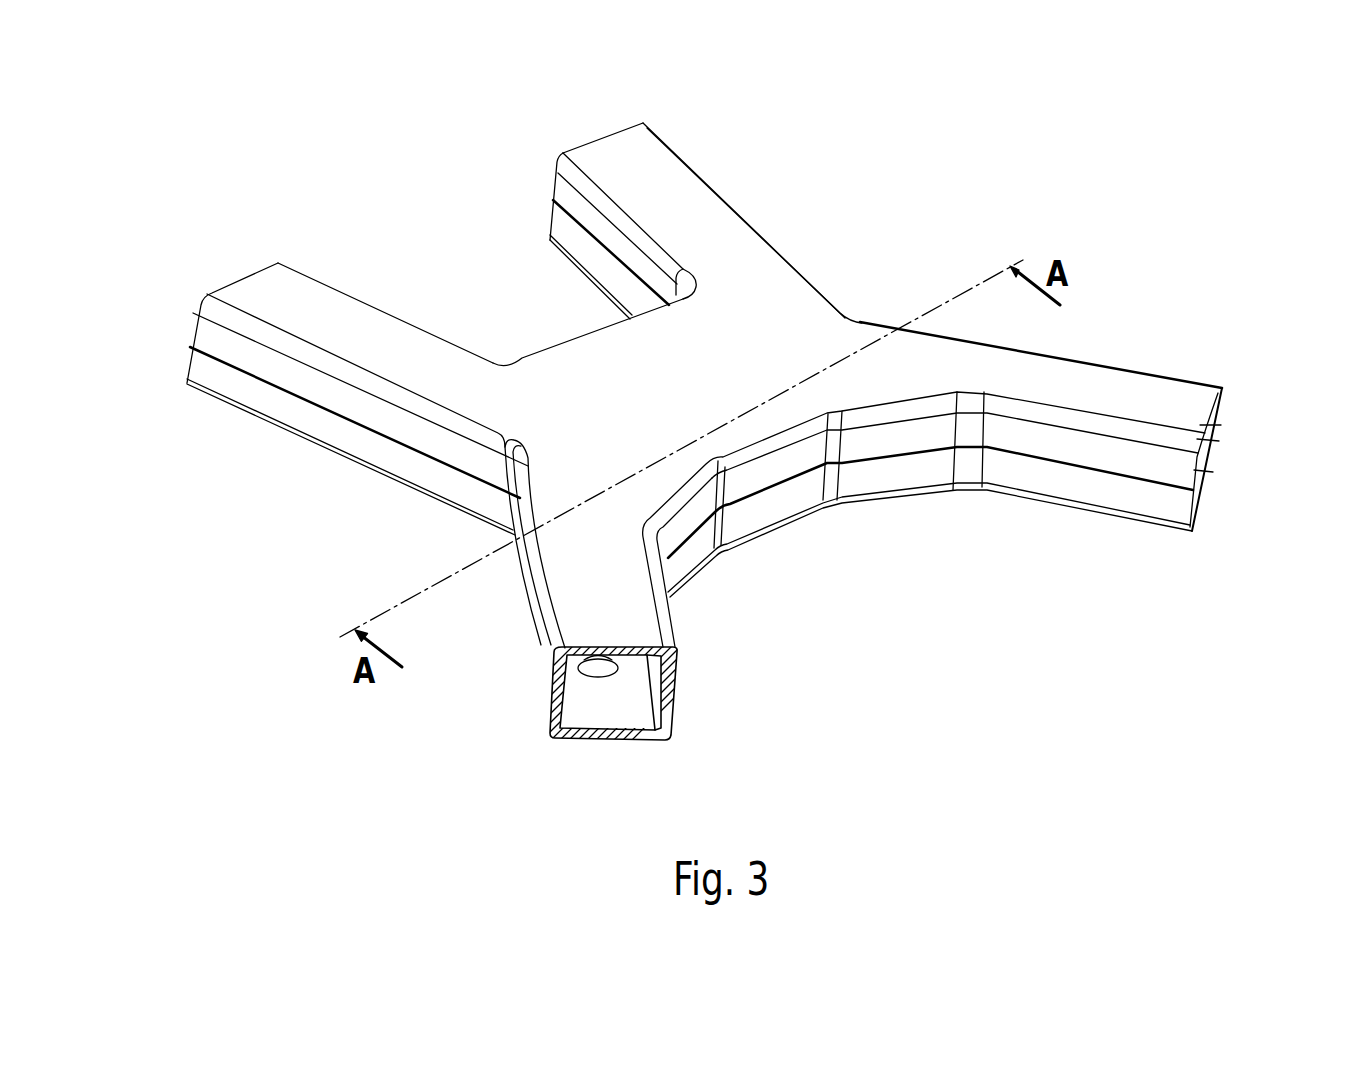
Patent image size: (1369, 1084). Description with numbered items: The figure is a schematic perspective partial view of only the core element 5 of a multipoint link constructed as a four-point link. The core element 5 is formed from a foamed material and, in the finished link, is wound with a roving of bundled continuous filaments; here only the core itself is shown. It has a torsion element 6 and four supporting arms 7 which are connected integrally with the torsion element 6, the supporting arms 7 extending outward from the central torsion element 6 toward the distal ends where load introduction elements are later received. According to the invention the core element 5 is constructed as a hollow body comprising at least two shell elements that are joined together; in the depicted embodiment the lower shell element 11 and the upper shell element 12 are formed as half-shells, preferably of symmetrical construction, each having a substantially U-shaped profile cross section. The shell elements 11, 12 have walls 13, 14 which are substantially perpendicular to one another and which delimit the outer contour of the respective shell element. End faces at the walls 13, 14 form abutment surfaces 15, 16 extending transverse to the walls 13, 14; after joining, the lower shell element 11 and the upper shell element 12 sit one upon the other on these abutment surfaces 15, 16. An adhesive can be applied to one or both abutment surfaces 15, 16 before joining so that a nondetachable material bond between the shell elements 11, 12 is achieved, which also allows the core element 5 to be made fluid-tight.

The core element 5 is at (567, 423).
The torsion element 6 is at (827, 290).
The supporting arms 7 is at (668, 180).
The lower shell element 11 is at (317, 448).
The upper shell element 12 is at (248, 275).
The wall 13 is at (553, 240).
The wall 14 is at (552, 190).
The abutment surface 15 is at (553, 700).
The abutment surface 16 is at (673, 688).